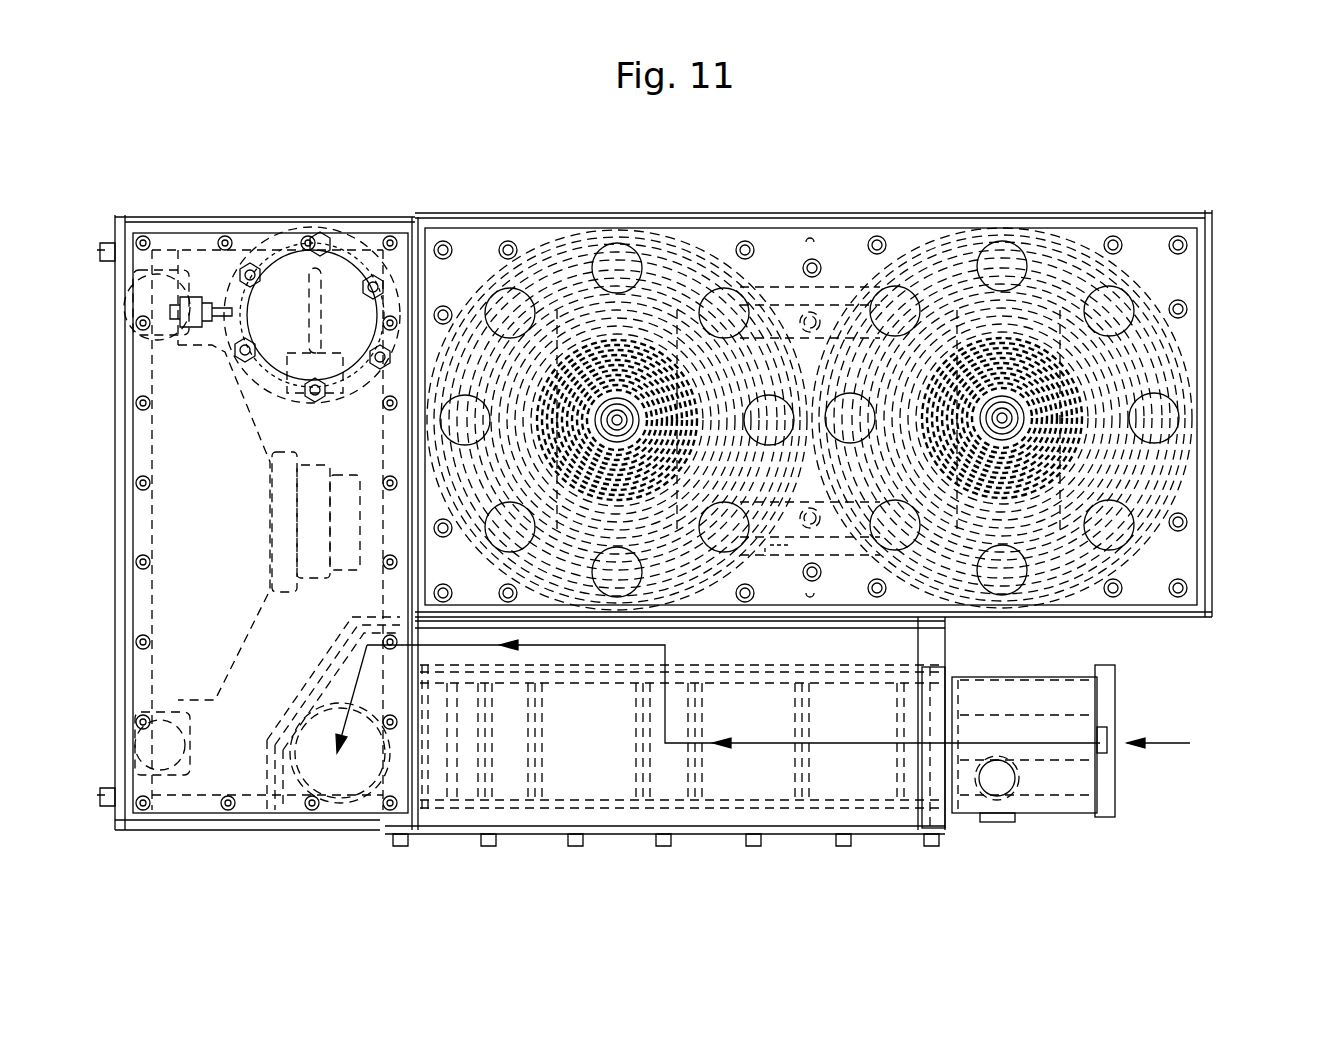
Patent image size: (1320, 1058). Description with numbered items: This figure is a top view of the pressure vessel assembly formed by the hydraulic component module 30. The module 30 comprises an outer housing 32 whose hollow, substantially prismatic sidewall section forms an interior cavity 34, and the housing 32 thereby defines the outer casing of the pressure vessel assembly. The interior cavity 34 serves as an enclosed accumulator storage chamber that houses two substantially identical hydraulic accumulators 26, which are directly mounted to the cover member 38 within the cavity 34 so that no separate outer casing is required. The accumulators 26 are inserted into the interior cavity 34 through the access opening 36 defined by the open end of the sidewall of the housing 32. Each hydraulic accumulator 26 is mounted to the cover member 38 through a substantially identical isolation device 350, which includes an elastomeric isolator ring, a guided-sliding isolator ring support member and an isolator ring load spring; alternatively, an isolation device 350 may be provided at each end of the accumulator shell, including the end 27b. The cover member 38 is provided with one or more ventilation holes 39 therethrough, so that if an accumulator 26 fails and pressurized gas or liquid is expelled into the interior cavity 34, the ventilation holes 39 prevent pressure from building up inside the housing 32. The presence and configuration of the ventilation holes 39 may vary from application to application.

The hydraulic component module 30 is at (1040, 195).
The housing 32 is at (615, 205).
The hydraulic accumulator 26 is at (700, 268).
The interior cavity 34 is at (835, 320).
The end of the shell 27b is at (965, 318).
The cover member 38 is at (1178, 278).
The isolation device 350 is at (566, 340).
The ventilation hole 39 is at (612, 592).
The access opening 36 is at (782, 545).